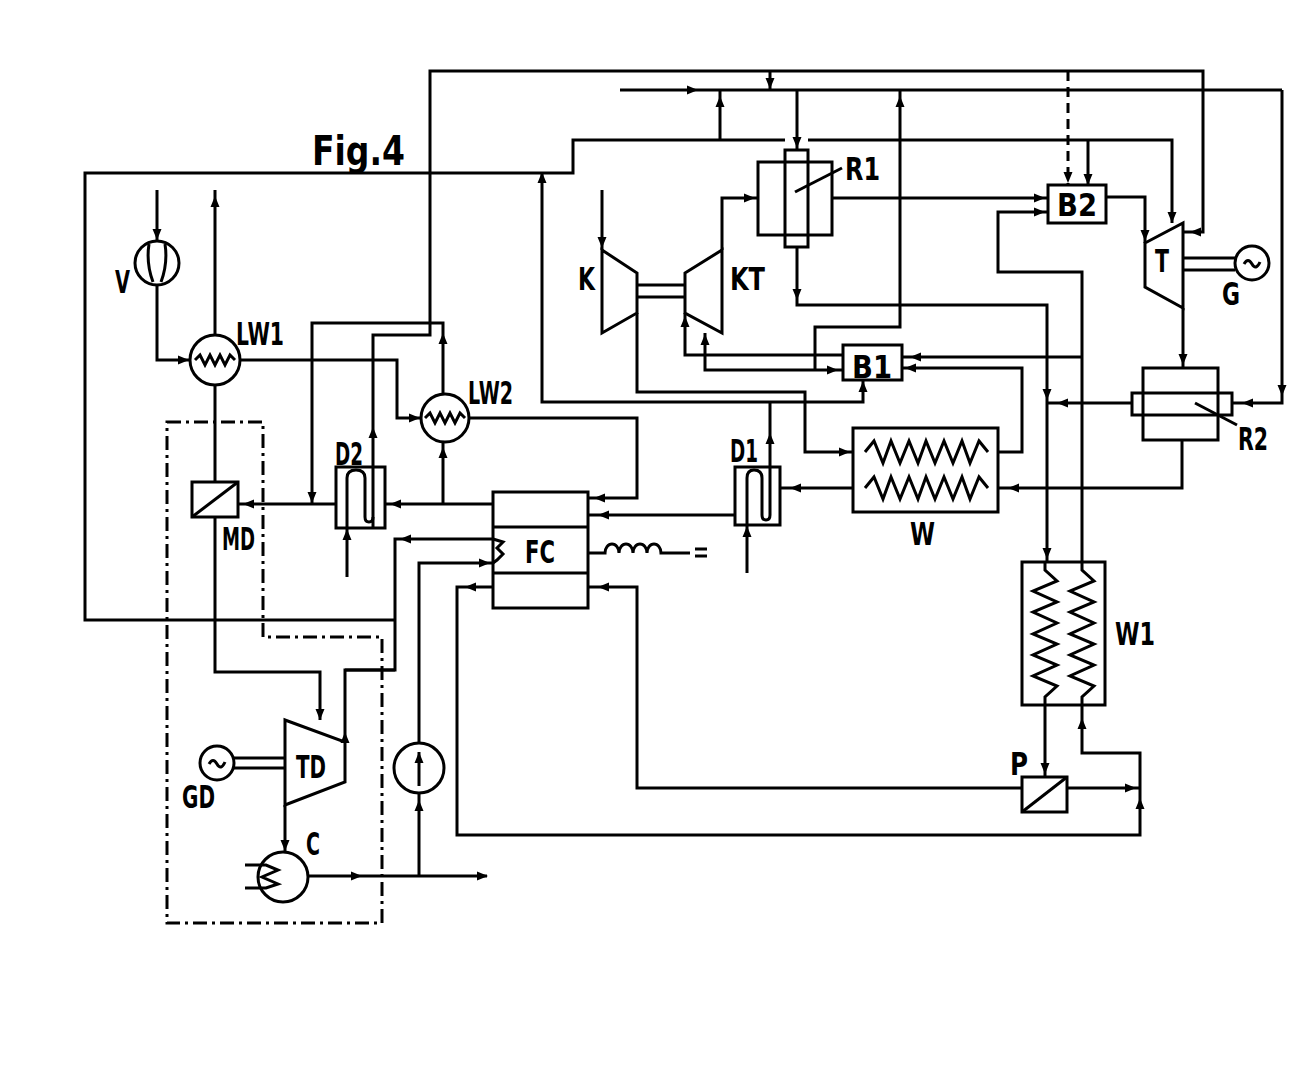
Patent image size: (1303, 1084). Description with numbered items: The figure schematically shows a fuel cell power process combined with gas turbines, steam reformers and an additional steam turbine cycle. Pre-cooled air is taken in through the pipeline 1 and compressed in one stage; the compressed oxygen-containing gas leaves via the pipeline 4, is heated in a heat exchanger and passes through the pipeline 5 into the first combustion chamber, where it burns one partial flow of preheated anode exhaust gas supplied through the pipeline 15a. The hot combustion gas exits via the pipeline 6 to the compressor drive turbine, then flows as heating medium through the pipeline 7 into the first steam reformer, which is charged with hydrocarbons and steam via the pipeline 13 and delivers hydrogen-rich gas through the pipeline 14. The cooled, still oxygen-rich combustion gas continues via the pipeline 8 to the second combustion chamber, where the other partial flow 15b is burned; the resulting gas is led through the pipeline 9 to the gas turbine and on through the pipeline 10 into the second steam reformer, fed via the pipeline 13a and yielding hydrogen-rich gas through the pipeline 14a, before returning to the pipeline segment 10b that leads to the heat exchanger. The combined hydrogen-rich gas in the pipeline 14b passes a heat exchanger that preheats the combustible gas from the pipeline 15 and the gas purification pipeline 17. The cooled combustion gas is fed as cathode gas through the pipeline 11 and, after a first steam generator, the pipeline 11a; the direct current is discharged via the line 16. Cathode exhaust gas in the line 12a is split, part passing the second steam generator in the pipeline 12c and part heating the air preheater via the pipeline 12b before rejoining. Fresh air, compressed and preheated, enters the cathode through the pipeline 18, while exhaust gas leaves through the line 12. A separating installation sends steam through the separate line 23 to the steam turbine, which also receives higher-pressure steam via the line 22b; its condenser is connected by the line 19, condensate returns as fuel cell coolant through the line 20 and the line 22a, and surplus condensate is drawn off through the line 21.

The pipeline 1 is at (596, 218).
The pipeline 4 is at (734, 385).
The pipeline 5 is at (962, 408).
The pipeline 6 is at (762, 336).
The pipeline 7 is at (729, 222).
The pipeline 8 is at (940, 185).
The pipeline 9 is at (1128, 203).
The pipeline 10 is at (1197, 338).
The pipeline segment 10b is at (1090, 483).
The pipeline 11 is at (816, 479).
The pipeline 11a is at (661, 502).
The pipeline 12 is at (268, 455).
The line 12a is at (464, 477).
The pipeline 12b is at (378, 397).
The pipeline 12c is at (365, 494).
The pipeline 13 is at (951, 118).
The pipeline 13a is at (1259, 249).
The pipeline 14 is at (922, 325).
The pipeline 14a is at (1089, 390).
The pipeline 14b is at (820, 597).
The pipeline 15 is at (801, 713).
The pipeline 15a is at (992, 343).
The pipeline 15b is at (1040, 385).
The line 16 is at (647, 570).
The pipeline 17 is at (1103, 806).
The pipeline 18 is at (382, 340).
The line 19 is at (298, 827).
The line 20 is at (363, 894).
The line 21 is at (453, 894).
The line 22a is at (454, 718).
The line 22b is at (364, 657).
The line 23 is at (274, 672).